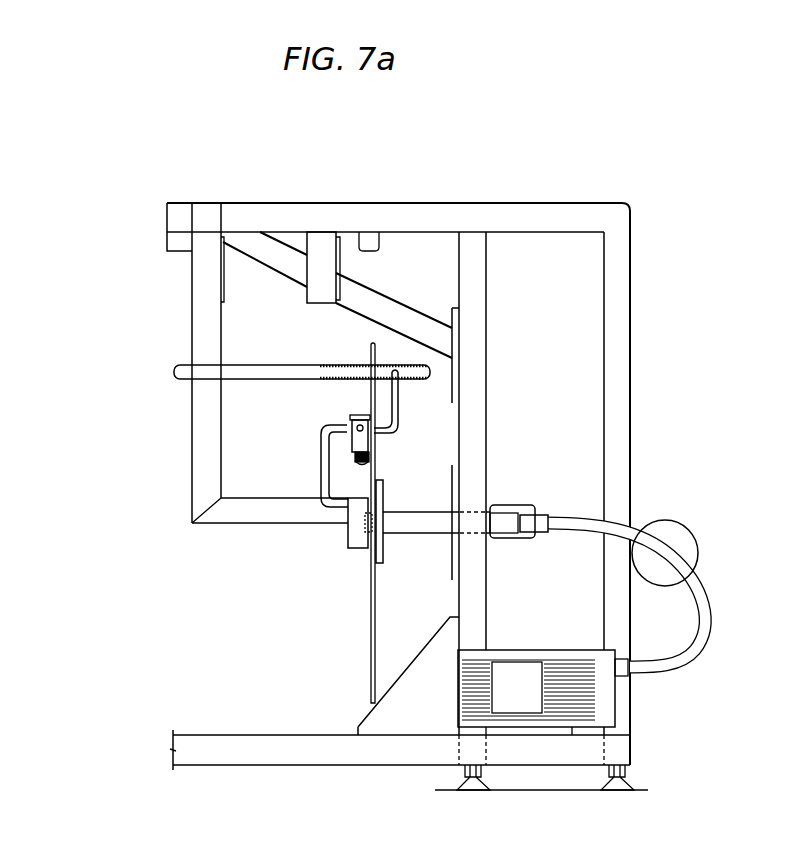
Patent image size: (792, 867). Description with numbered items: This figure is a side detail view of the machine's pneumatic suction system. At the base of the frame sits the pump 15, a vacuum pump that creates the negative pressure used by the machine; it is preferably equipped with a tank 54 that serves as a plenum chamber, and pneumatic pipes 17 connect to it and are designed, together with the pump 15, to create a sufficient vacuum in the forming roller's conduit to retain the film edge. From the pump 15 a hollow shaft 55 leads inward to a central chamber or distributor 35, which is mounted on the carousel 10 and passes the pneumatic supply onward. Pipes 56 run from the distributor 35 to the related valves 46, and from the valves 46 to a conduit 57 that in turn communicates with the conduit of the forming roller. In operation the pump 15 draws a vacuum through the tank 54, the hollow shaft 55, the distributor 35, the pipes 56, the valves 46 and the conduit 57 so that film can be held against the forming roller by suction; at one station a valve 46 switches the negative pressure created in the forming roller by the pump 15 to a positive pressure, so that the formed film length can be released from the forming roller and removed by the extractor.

The conduit 57 is at (407, 365).
The valve 46 is at (352, 418).
The pipes 56 is at (325, 455).
The central chamber or distributor 35 is at (358, 528).
The hollow shaft 55 is at (418, 523).
The carousel 10 is at (372, 650).
The pneumatic pipes 17 is at (560, 523).
The tank 54 is at (672, 535).
The pump 15 is at (583, 692).